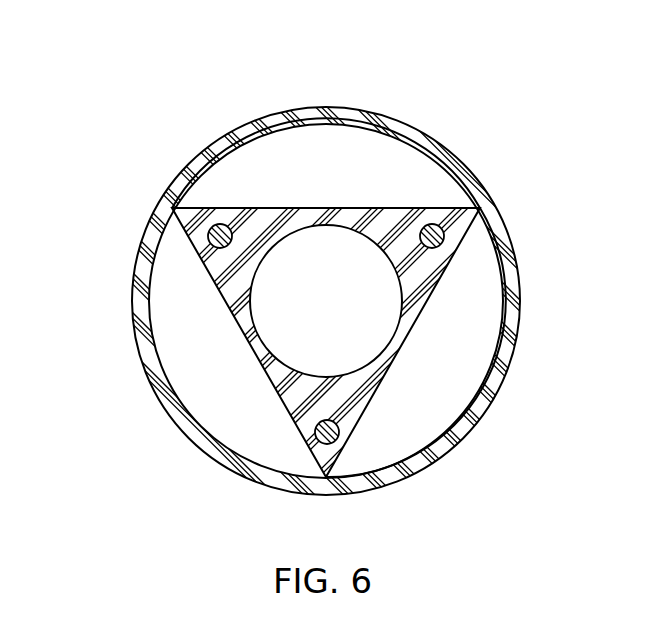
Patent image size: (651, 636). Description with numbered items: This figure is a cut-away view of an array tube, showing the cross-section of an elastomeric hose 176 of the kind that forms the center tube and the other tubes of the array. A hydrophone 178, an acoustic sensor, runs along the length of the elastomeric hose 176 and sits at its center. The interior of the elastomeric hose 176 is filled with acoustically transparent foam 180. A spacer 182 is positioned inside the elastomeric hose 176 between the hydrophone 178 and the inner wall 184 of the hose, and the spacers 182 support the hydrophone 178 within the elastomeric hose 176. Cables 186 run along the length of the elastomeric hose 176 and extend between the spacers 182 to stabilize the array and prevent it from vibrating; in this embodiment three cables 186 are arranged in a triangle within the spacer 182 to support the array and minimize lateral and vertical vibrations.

The elastomeric hose 176 is at (137, 345).
The hydrophone 178 is at (348, 315).
The acoustically transparent foam 180 is at (323, 140).
The spacer 182 is at (253, 222).
The inner wall 184 is at (503, 268).
The cable 186 is at (208, 238).